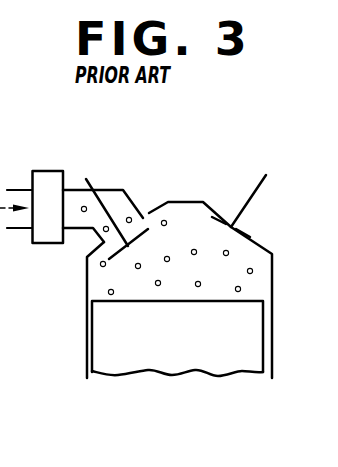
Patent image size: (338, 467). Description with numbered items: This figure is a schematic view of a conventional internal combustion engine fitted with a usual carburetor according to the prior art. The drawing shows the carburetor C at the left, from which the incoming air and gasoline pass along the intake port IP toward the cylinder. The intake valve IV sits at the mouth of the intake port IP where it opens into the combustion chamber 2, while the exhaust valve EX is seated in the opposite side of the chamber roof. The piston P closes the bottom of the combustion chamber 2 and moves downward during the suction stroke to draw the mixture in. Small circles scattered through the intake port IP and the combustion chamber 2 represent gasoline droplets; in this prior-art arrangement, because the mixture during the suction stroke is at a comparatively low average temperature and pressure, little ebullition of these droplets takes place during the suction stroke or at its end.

The carburetor C is at (46, 187).
The intake valve IV is at (106, 202).
The exhaust valve EX is at (248, 203).
The intake port IP is at (80, 232).
The combustion chamber 2 is at (105, 277).
The piston P is at (248, 336).